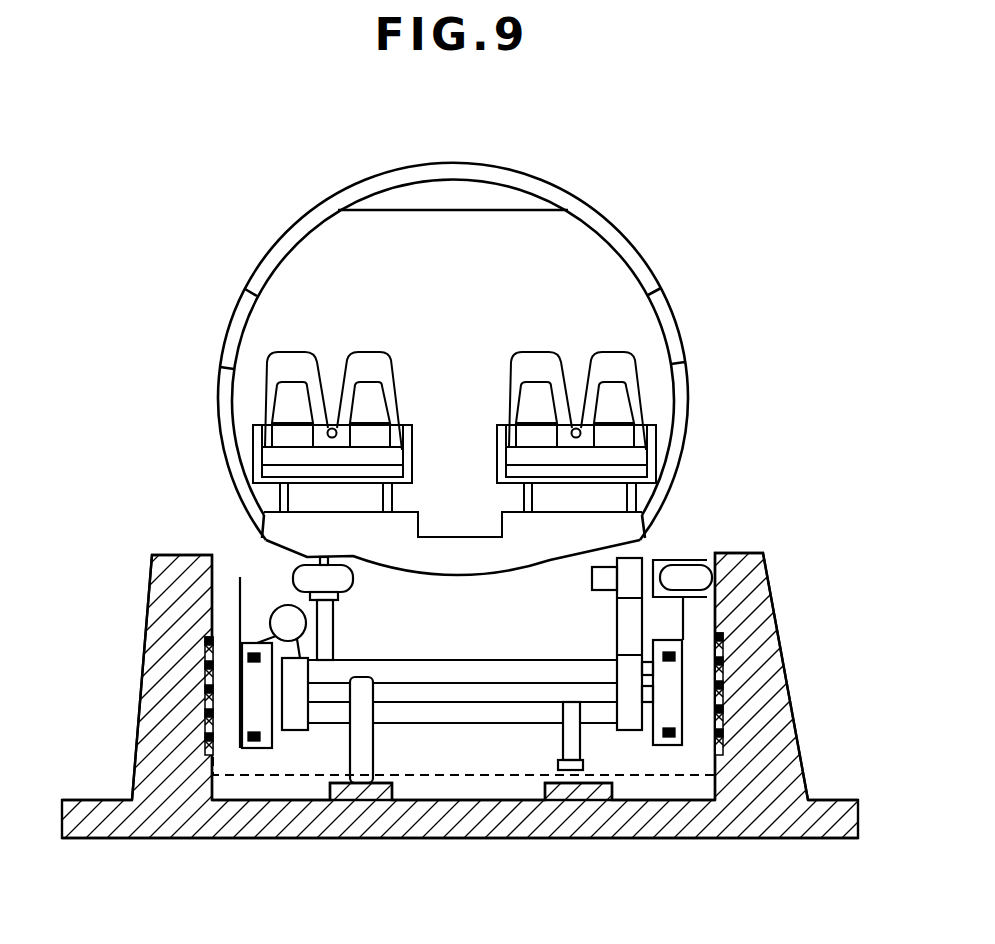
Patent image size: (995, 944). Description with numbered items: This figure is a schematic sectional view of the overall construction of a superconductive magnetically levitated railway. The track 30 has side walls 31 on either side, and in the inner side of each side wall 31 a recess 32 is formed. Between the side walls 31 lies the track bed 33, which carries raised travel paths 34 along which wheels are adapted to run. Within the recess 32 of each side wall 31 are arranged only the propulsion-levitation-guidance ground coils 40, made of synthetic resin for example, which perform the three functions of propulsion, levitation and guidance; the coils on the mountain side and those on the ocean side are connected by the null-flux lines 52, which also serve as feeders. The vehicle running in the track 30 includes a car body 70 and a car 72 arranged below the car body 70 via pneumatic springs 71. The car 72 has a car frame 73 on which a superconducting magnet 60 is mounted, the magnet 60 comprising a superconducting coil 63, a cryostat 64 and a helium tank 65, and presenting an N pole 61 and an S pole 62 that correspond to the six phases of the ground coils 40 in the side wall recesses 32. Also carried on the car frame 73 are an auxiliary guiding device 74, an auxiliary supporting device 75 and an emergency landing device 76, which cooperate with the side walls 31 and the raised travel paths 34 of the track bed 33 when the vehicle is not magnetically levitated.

The track 30 is at (128, 744).
The side wall 31 is at (157, 720).
The recess 32 is at (718, 693).
The track bed 33 is at (470, 820).
The raised travel path 34 is at (363, 790).
The propulsion-levitation-guidance ground coil 40 is at (205, 638).
The null-flux line 52 is at (427, 776).
The superconducting magnet 60 is at (680, 653).
The N pole 61 is at (250, 742).
The S pole 62 is at (263, 724).
The superconducting coil 63 is at (668, 738).
The cryostat 64 is at (663, 705).
The helium tank 65 is at (274, 609).
The car body 70 is at (653, 275).
The pneumatic spring 71 is at (239, 577).
The car 72 is at (438, 650).
The car frame 73 is at (282, 690).
The auxiliary guiding device 74 is at (683, 568).
The auxiliary supporting device 75 is at (355, 740).
The emergency landing device 76 is at (568, 743).